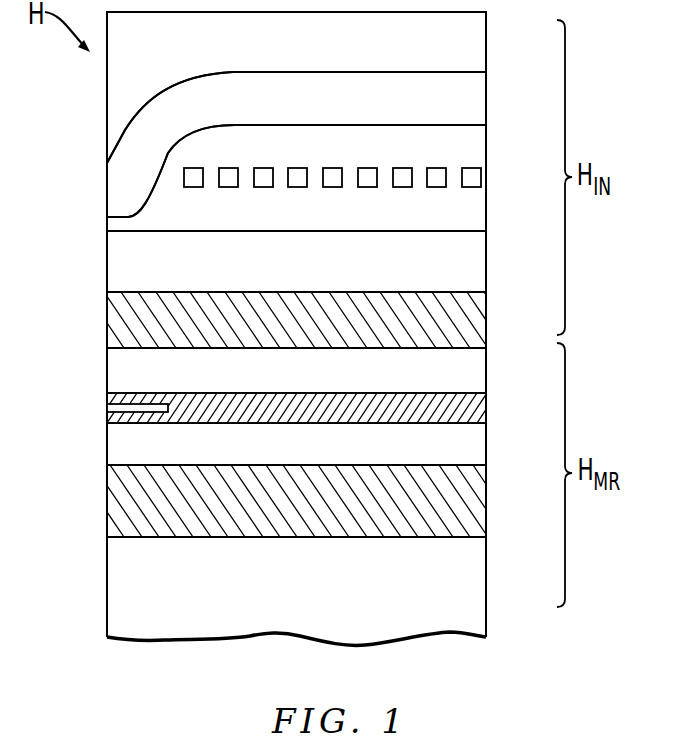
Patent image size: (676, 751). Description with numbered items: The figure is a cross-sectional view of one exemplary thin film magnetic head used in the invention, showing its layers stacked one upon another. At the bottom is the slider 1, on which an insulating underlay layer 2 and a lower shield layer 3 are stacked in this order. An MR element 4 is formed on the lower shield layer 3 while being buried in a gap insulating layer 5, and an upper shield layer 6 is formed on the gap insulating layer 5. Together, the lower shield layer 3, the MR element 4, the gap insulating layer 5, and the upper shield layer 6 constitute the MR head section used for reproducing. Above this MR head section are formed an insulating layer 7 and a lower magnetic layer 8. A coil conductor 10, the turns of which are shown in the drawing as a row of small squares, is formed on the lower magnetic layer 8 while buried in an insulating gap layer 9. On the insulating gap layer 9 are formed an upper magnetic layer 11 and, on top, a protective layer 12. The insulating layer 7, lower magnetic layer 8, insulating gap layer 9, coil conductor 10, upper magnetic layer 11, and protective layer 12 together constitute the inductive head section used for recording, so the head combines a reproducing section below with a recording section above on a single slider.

The slider 1 is at (486, 593).
The insulating underlay layer 2 is at (486, 502).
The lower shield layer 3 is at (486, 445).
The MR element 4 is at (76, 412).
The gap insulating layer 5 is at (486, 407).
The upper shield layer 6 is at (486, 370).
The insulating layer 7 is at (486, 318).
The lower magnetic layer 8 is at (486, 261).
The insulating gap layer 9 is at (486, 210).
The coil conductor 10 is at (446, 168).
The upper magnetic layer 11 is at (486, 100).
The protective layer 12 is at (486, 42).